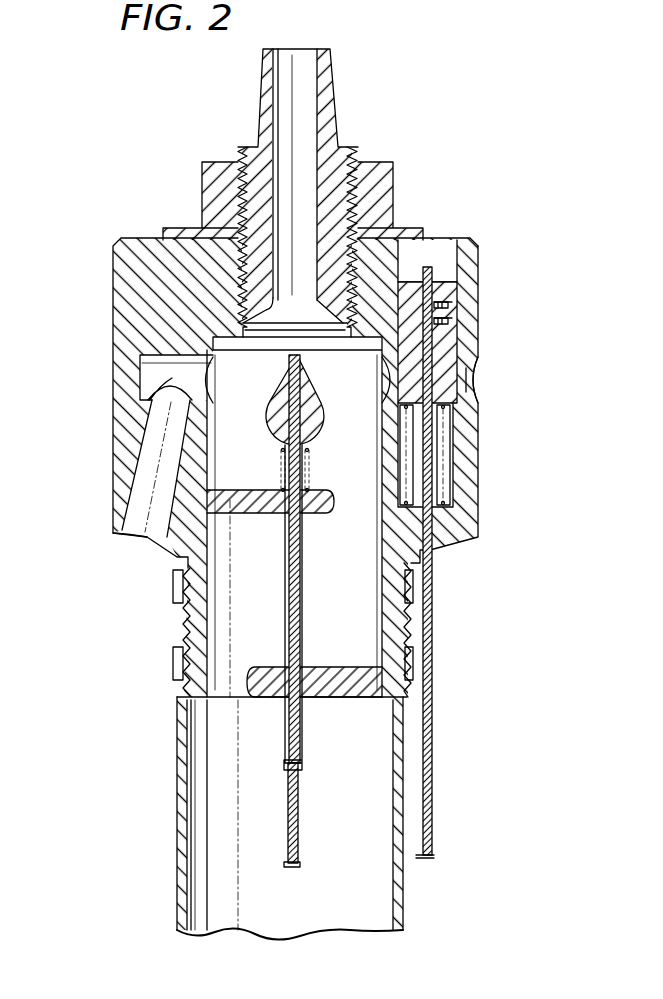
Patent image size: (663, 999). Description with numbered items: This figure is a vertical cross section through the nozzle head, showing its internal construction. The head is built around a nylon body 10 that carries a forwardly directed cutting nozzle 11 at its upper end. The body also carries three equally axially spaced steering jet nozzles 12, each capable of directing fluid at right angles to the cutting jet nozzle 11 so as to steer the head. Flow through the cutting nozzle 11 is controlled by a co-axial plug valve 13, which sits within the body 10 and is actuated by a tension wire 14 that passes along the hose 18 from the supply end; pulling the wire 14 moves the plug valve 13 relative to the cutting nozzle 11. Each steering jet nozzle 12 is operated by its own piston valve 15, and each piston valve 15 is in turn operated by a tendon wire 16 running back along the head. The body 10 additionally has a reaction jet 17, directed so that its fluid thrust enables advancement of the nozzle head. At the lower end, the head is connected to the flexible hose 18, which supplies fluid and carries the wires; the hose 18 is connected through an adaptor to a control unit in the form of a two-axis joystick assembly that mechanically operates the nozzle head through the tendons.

The nylon body 10 is at (122, 280).
The cutting nozzle 11 is at (300, 66).
The steering jet nozzle 12 is at (470, 387).
The plug valve 13 is at (315, 420).
The tension wire 14 is at (293, 815).
The piston valve 15 is at (447, 338).
The tendon wire 16 is at (428, 692).
The reaction jet 17 is at (150, 530).
The flexible hose 18 is at (180, 867).